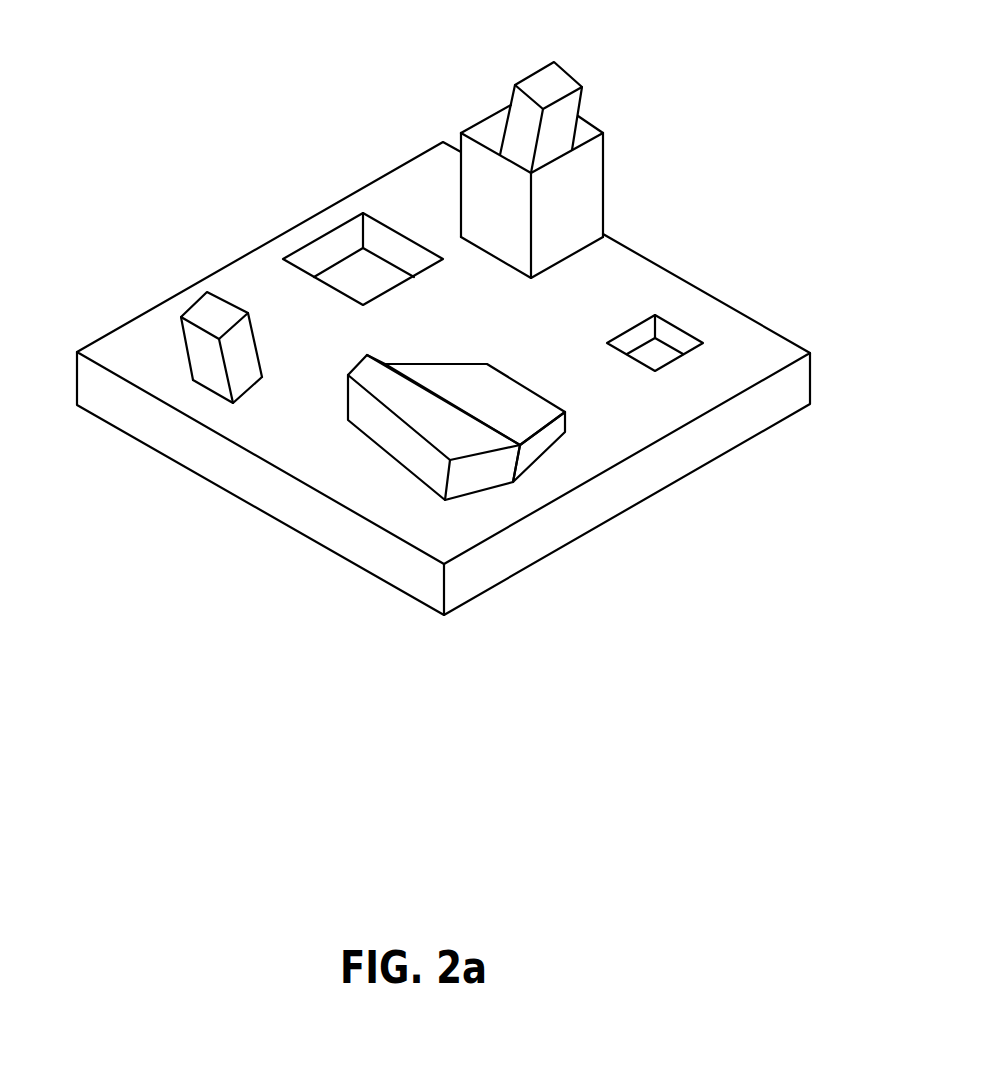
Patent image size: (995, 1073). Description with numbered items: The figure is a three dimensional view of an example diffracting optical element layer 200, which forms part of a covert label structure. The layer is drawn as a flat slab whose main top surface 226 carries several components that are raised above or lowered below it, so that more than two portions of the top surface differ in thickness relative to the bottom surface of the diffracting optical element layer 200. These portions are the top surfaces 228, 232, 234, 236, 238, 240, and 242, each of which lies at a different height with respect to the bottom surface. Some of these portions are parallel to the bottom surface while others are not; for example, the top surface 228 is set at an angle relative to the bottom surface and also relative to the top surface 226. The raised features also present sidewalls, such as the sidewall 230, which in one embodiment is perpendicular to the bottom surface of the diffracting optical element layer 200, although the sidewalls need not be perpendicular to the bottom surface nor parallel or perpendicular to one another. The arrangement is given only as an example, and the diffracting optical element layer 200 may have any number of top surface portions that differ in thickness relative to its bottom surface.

The diffracting optical element layer 200 is at (355, 190).
The top surface 226 is at (133, 338).
The top surface 228 is at (218, 325).
The sidewall 230 is at (393, 440).
The top surface 232 is at (443, 428).
The top surface 234 is at (503, 417).
The top surface 236 is at (662, 357).
The top surface 238 is at (543, 83).
The top surface 240 is at (492, 135).
The top surface 242 is at (355, 277).